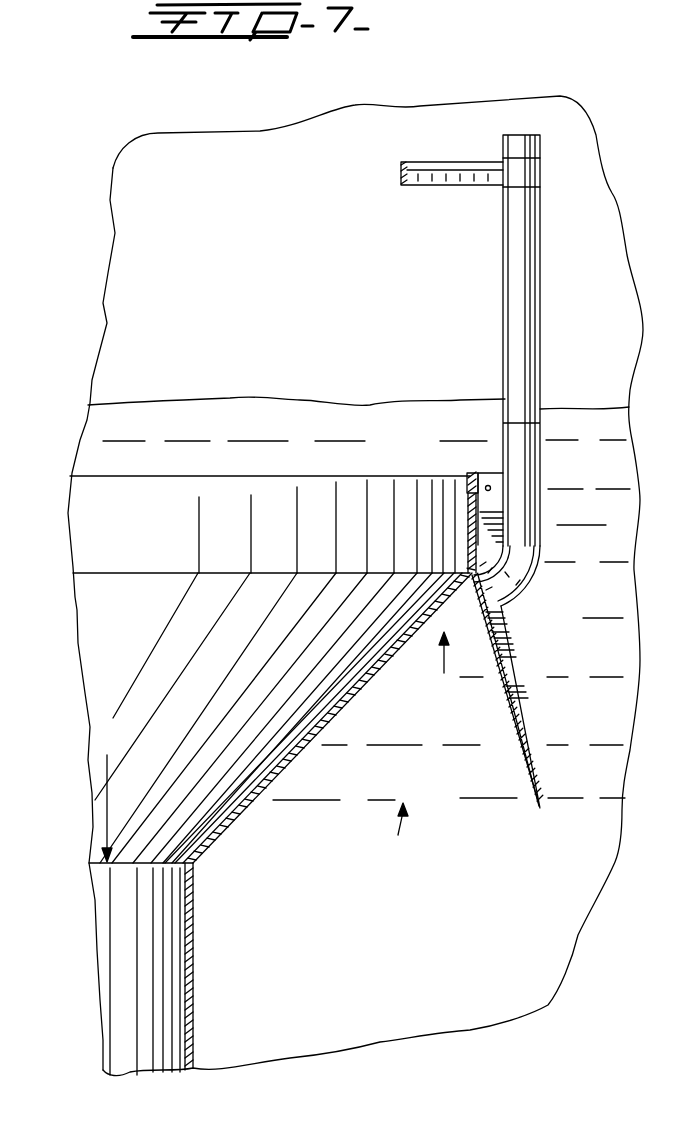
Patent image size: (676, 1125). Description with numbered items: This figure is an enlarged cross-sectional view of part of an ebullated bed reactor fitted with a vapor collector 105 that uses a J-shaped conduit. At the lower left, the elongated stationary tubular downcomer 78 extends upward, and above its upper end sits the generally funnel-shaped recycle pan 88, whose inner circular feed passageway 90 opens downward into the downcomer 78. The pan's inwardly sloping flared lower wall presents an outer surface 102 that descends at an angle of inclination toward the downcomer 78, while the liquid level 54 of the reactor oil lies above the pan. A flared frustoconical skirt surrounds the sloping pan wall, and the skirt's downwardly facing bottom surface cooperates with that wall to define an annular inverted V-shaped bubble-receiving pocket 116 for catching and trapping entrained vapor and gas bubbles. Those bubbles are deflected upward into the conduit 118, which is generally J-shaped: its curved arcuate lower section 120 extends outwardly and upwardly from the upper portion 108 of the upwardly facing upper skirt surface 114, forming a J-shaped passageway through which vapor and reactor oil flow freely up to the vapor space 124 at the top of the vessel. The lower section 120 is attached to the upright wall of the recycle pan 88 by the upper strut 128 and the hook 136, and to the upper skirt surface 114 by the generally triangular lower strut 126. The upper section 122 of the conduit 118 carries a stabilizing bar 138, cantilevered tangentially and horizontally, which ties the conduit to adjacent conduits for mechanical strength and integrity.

The liquid level 54 is at (292, 401).
The downcomer 78 is at (107, 905).
The recycle pan 88 is at (390, 476).
The inner circular feed passageway 90 is at (141, 794).
The outer surface 102 is at (282, 760).
The vapor collector 105 is at (442, 671).
The upper portion of the skirt 108 is at (492, 620).
The upper surface of the skirt 114 is at (516, 706).
The bubble-receiving pocket 116 is at (401, 837).
The conduit 118 is at (528, 334).
The lower section of the conduit 120 is at (532, 577).
The upper section 122 is at (535, 182).
The vapor space 124 is at (470, 139).
The lower strut 126 is at (510, 664).
The upper strut 128 is at (491, 473).
The hook 136 is at (472, 473).
The stabilizing bar 138 is at (442, 185).